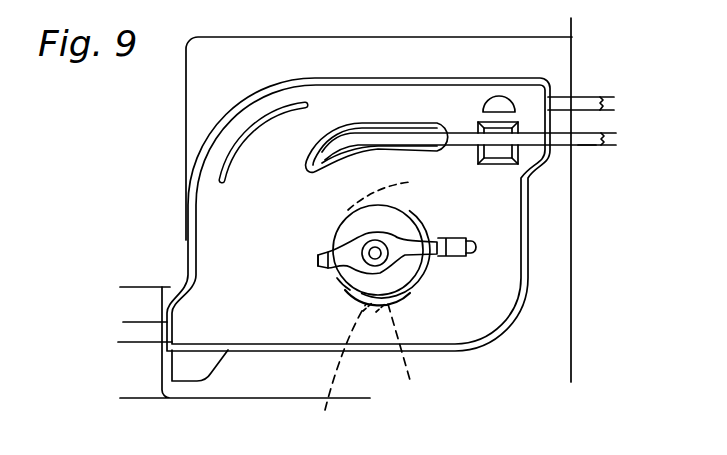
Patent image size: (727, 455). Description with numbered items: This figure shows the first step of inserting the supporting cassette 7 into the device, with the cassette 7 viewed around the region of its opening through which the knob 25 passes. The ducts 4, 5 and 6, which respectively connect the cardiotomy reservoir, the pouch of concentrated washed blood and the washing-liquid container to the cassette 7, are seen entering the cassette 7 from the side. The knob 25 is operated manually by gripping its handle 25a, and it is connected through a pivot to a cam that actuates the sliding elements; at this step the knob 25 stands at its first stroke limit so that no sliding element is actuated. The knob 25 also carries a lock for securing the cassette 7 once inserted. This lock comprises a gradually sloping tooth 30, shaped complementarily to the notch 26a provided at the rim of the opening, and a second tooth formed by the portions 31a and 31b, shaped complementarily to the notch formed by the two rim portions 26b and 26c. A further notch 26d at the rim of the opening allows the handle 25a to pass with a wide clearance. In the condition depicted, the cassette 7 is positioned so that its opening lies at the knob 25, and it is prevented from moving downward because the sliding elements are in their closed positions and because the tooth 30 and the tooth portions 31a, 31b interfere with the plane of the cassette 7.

The duct 4 is at (618, 142).
The duct 5 is at (583, 148).
The duct 6 is at (616, 97).
The cassette 7 is at (242, 107).
The knob 25 is at (350, 232).
The handle 25a is at (317, 266).
The notch 26a is at (430, 224).
The notch portion 26b is at (337, 286).
The notch portion 26c is at (320, 252).
The notch 26d is at (477, 251).
The gradually sloping tooth 30 is at (404, 187).
The tooth portion 31a is at (427, 364).
The tooth portion 31b is at (359, 378).